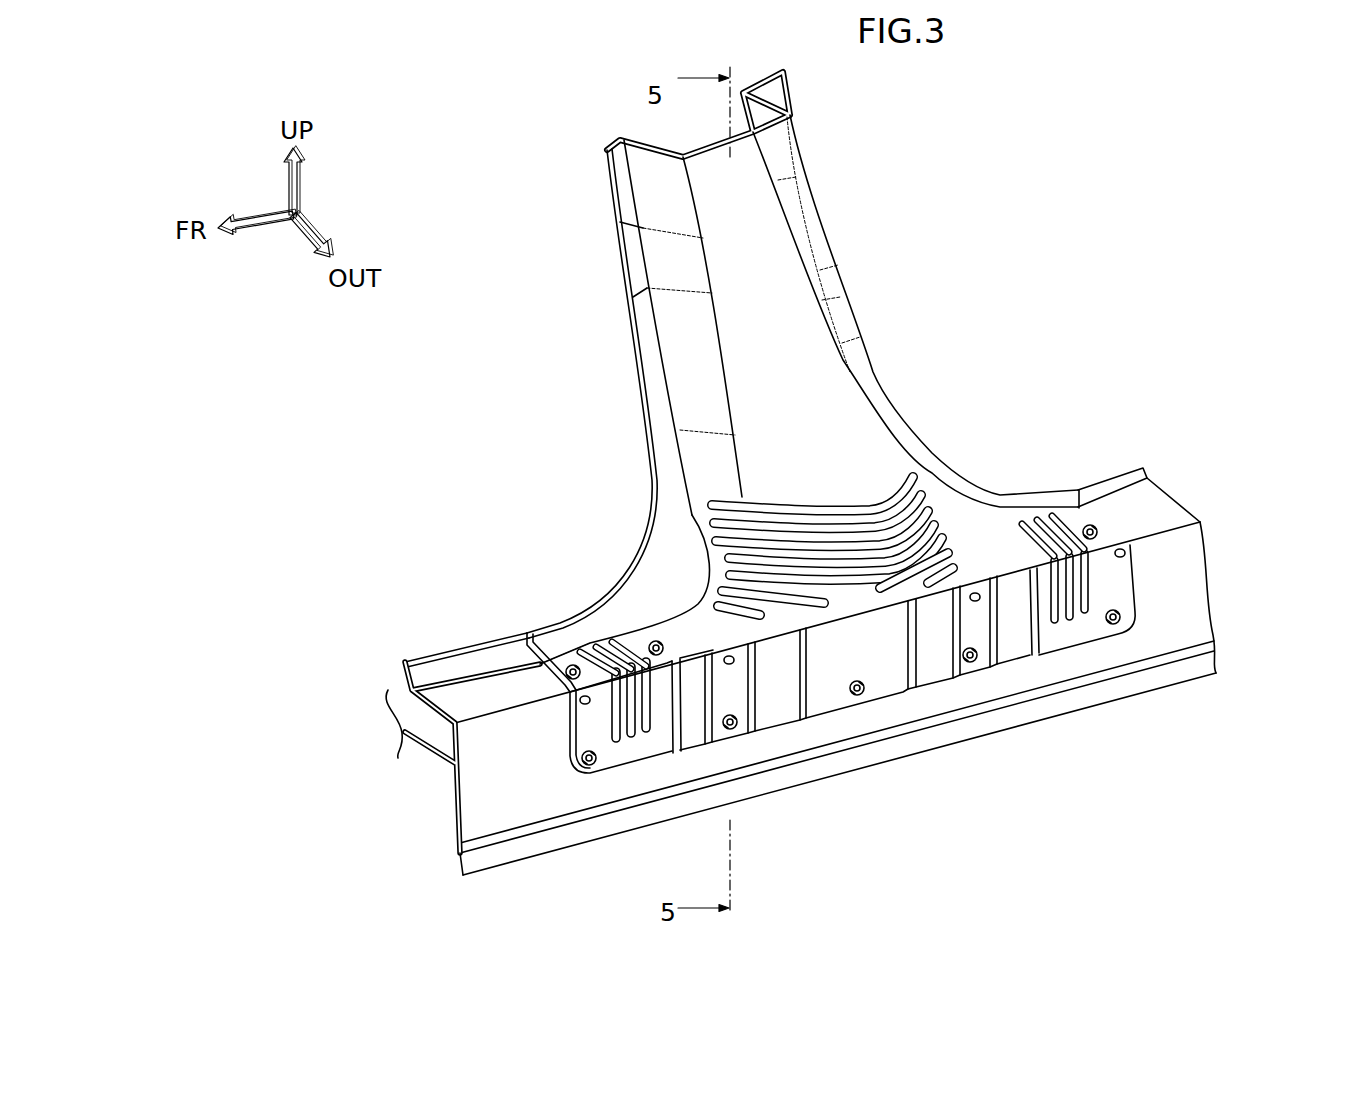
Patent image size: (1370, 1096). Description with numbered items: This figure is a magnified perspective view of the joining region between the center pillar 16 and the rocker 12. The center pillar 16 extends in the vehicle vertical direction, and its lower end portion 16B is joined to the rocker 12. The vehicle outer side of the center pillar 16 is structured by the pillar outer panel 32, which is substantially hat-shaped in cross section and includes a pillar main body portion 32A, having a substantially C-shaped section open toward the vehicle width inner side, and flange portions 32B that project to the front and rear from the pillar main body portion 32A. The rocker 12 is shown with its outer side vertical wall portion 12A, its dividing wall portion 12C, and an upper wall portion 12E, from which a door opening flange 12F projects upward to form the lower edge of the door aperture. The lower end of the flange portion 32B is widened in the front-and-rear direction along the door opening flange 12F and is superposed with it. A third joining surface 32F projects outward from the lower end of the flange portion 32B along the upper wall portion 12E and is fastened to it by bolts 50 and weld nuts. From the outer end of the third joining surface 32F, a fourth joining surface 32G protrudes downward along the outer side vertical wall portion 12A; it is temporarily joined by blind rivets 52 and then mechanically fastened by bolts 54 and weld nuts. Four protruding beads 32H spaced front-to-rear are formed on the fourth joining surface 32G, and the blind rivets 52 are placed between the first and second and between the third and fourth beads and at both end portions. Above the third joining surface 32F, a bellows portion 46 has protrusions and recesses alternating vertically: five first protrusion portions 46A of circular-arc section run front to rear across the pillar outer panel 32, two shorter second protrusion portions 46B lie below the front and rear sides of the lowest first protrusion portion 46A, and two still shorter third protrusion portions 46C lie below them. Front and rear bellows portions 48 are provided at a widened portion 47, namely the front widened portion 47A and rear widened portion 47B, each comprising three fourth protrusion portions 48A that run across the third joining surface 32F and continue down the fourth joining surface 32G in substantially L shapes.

The rocker 12 is at (766, 633).
The outer side vertical wall portion 12A is at (1180, 600).
The dividing wall portion 12C is at (428, 738).
The upper wall portion 12E is at (1157, 512).
The door opening flange 12F is at (1138, 482).
The center pillar 16 is at (778, 501).
The lower end portion 16B is at (778, 501).
The pillar outer panel 32 is at (778, 501).
The pillar main body portion 32A is at (793, 327).
The flange portion 32B is at (648, 357).
The third joining surface 32F is at (554, 663).
The fourth joining surface 32G is at (609, 762).
The protruding beads 32H is at (783, 703).
The bellows portion 46 is at (920, 484).
The first protrusion portions 46A is at (843, 500).
The second protrusion portions 46B is at (935, 556).
The third protrusion portions 46C is at (962, 571).
The widened portion 47 is at (891, 739).
The widened portion 47A is at (568, 726).
The widened portion 47B is at (1083, 632).
The front and rear bellows portions 48 is at (629, 746).
The fourth protrusion portions 48A is at (601, 661).
The bolts 50 is at (656, 641).
The blind rivets 52 is at (581, 700).
The bolts 54 is at (738, 724).